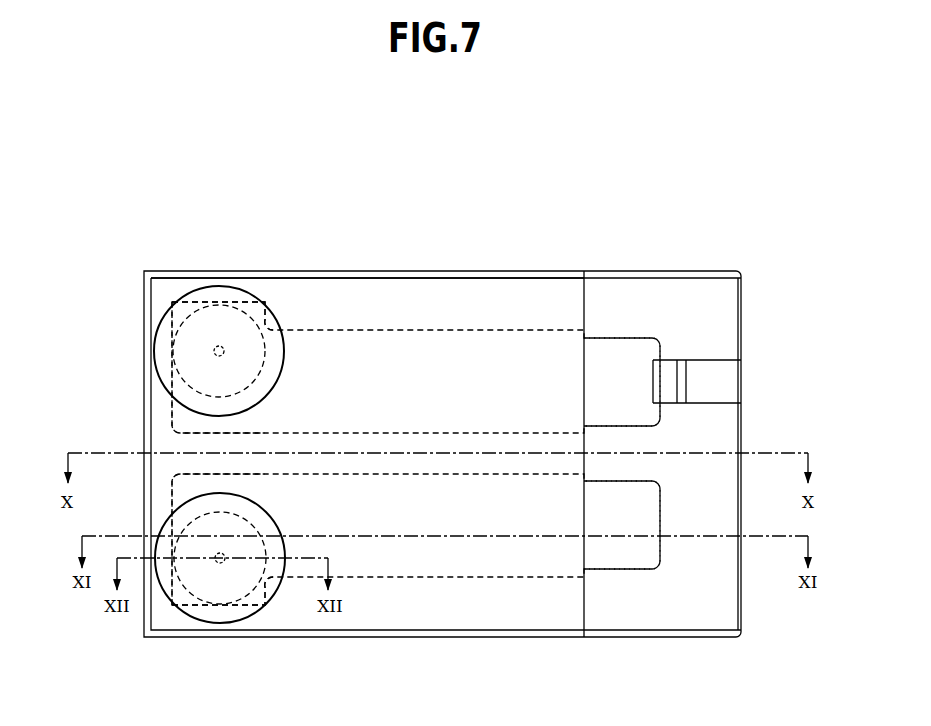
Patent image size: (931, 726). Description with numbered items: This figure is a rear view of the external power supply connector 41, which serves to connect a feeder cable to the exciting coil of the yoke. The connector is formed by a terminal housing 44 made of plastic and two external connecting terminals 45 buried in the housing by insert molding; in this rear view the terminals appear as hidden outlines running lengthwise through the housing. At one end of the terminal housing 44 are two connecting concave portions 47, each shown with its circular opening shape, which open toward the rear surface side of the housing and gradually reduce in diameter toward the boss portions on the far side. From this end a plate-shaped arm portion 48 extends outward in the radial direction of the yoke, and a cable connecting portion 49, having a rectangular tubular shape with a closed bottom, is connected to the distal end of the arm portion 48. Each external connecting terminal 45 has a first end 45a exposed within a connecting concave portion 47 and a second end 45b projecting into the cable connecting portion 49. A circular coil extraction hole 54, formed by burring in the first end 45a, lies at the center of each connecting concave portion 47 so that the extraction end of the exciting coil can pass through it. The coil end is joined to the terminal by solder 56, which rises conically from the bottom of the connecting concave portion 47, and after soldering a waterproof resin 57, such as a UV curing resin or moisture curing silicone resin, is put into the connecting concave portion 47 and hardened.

The external power supply connector 41 is at (354, 268).
The terminal housing 44 is at (453, 271).
The external connecting terminal 45 is at (428, 330).
The first end 45a is at (178, 424).
The second end 45b is at (631, 338).
The connecting concave portion 47 is at (224, 291).
The arm portion 48 is at (500, 293).
The cable connecting portion 49 is at (713, 318).
The coil extraction hole 54 is at (172, 313).
The solder 56 is at (284, 323).
The waterproof resin 57 is at (166, 358).